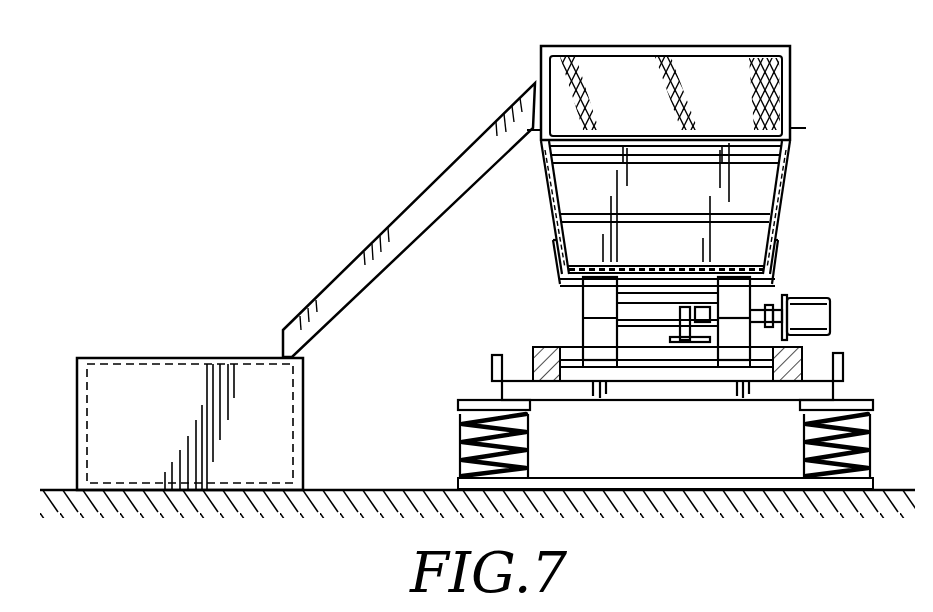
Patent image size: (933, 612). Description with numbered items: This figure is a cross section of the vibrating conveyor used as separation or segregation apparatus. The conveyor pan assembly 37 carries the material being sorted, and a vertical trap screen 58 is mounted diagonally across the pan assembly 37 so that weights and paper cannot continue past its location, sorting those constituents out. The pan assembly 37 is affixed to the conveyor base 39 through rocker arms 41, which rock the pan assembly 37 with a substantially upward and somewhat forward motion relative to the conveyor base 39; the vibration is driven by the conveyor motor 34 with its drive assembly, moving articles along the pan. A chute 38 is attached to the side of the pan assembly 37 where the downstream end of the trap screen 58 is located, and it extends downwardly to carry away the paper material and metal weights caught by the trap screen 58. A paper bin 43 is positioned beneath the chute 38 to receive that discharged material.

The conveyor motor 34 is at (805, 297).
The conveyor pan assembly 37 is at (780, 200).
The chute 38 is at (383, 270).
The conveyor base 39 is at (537, 347).
The rocker arms 41 is at (583, 323).
The paper bin 43 is at (163, 357).
The trap screen 58 is at (793, 84).